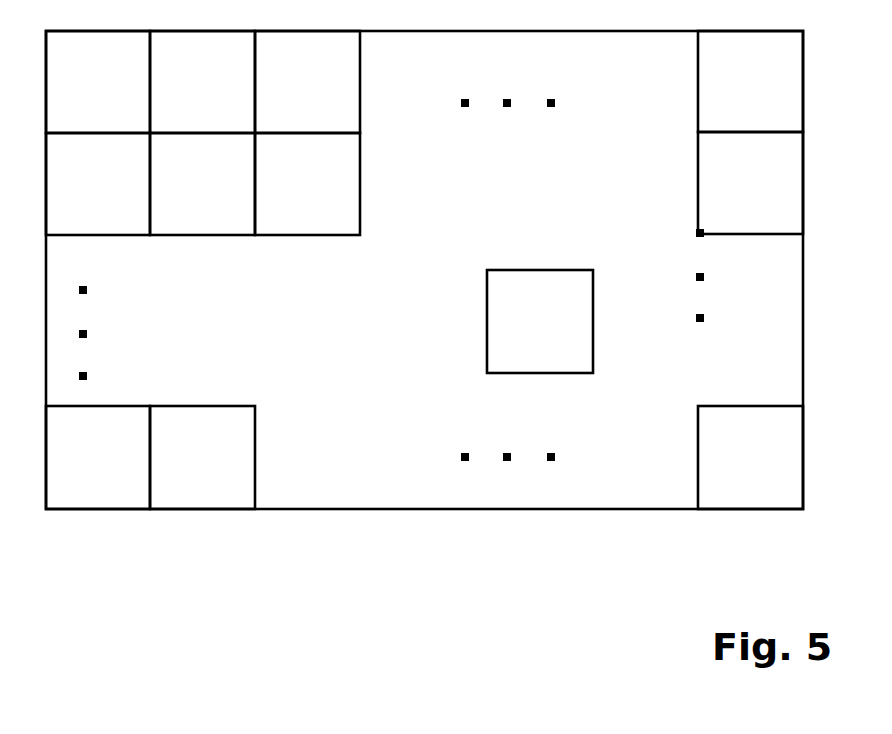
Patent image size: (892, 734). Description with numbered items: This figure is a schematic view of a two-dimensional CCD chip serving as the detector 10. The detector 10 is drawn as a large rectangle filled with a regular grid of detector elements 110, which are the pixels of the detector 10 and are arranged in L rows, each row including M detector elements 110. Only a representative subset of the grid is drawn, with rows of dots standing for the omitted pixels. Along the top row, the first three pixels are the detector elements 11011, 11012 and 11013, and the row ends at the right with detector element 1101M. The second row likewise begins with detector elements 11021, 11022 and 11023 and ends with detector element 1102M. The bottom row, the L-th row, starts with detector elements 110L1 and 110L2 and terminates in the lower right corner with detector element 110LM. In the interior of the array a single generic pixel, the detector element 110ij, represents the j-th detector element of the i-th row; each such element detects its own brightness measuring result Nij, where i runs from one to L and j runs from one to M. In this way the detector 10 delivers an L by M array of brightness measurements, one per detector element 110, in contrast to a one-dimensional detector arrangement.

The detector 10 is at (363, 327).
The detector elements 110 is at (424, 270).
The detector element 11011 is at (109, 98).
The detector element 11012 is at (211, 98).
The detector element 11013 is at (316, 98).
The detector element 1101M is at (758, 96).
The detector element 11021 is at (105, 201).
The detector element 11022 is at (211, 201).
The detector element 11023 is at (316, 201).
The detector element 1102M is at (758, 199).
The detector element 110ij is at (554, 338).
The detector element 110L1 is at (106, 474).
The detector element 110L2 is at (212, 474).
The detector element 110LM is at (758, 473).